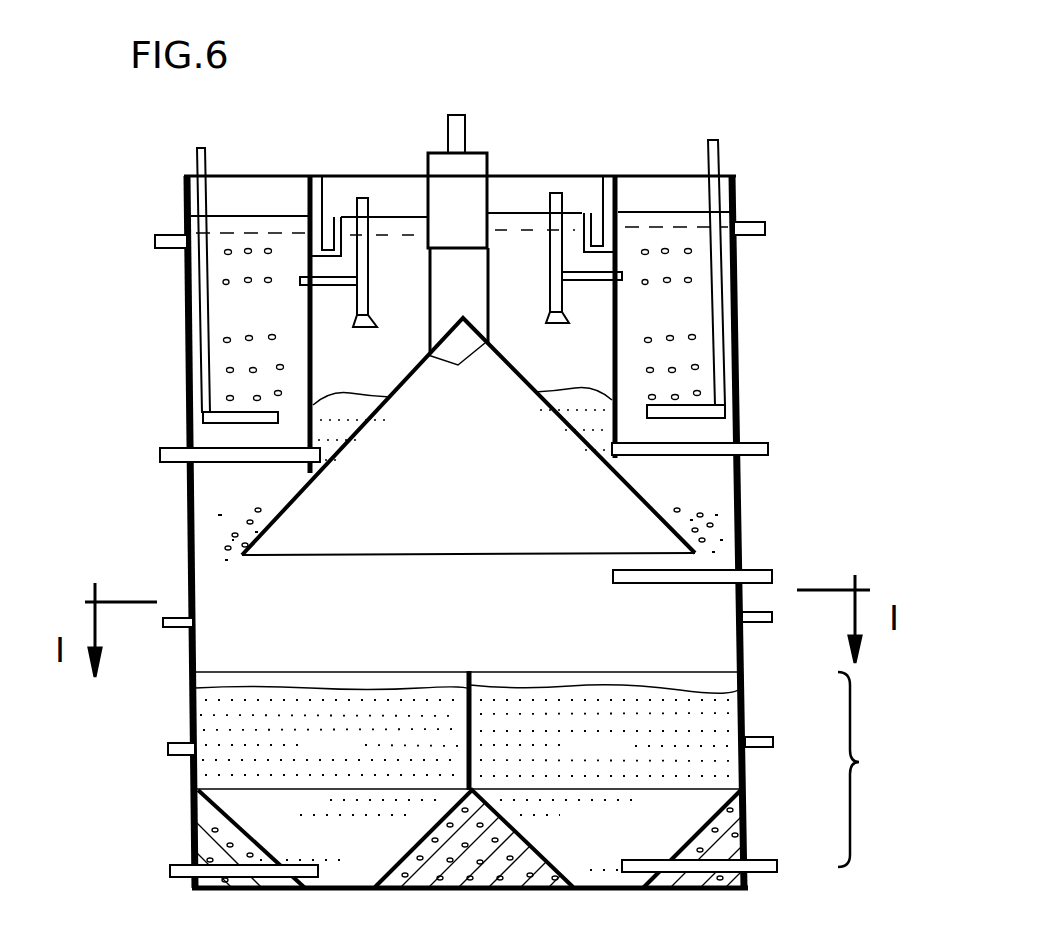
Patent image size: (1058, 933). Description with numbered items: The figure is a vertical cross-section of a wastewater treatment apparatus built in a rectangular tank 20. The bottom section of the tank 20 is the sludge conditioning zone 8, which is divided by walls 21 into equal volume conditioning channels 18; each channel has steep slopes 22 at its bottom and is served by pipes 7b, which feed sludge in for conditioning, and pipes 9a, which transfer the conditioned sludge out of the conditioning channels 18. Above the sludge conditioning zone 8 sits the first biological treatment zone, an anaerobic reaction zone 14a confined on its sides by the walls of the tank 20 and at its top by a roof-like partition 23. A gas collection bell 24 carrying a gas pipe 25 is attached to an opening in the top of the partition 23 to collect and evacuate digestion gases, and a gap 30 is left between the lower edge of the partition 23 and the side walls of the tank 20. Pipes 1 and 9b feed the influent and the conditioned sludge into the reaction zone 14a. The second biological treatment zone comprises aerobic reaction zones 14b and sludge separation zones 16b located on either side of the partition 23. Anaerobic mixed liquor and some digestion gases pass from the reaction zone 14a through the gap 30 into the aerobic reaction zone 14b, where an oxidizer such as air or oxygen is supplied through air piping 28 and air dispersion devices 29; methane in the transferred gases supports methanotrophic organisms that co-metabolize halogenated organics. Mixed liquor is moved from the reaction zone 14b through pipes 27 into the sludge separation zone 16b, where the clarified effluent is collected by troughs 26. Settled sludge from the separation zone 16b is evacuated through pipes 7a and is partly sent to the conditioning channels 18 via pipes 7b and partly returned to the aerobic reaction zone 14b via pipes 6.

The pipe 1 is at (758, 567).
The pipe 6 is at (172, 238).
The pipe 7a is at (170, 458).
The pipe 7b is at (178, 744).
The sludge conditioning zone 8 is at (867, 769).
The pipe 9a is at (185, 867).
The pipe 9b is at (180, 628).
The reaction zone 14a is at (495, 474).
The reaction zone 14b is at (283, 322).
The sludge separation zone 16b is at (390, 381).
The conditioning channel 18 is at (360, 772).
The tank 20 is at (186, 308).
The wall 21 is at (468, 676).
The steep slope 22 is at (470, 838).
The roof-like partition 23 is at (461, 376).
The gas collection bell 24 is at (476, 152).
The gas pipe 25 is at (466, 125).
The trough 26 is at (320, 250).
The pipe 27 is at (363, 197).
The air piping 28 is at (206, 163).
The air dispersion device 29 is at (247, 417).
The gap 30 is at (215, 549).